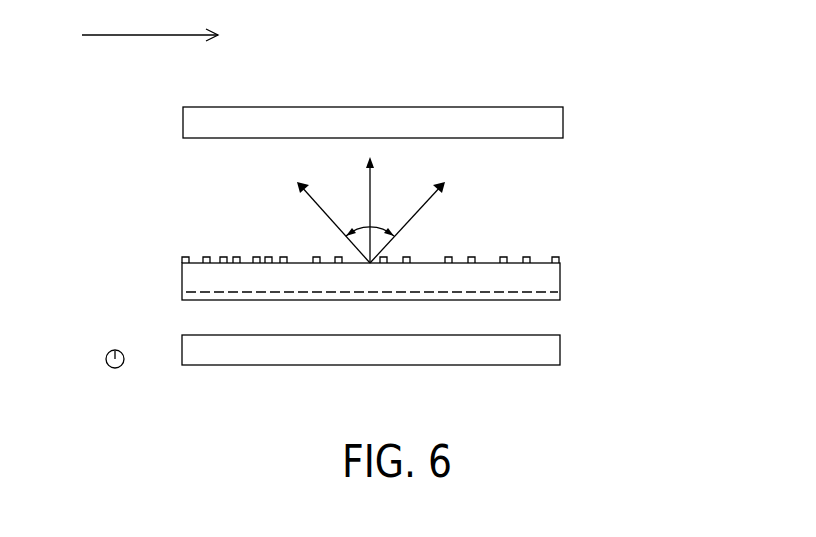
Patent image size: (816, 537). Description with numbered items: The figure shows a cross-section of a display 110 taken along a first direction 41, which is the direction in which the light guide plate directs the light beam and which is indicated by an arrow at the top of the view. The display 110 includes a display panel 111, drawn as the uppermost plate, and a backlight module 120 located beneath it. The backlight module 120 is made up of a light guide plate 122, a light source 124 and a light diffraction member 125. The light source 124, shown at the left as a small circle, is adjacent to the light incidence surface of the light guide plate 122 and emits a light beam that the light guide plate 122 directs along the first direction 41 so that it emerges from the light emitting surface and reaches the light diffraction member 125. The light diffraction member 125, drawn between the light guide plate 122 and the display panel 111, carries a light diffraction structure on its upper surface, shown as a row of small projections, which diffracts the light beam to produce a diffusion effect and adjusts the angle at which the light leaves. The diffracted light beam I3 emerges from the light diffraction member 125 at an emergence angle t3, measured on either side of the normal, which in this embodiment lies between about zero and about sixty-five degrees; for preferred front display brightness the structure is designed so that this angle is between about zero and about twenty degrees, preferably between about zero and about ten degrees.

The display 110 is at (695, 68).
The first direction 41 is at (168, 37).
The display panel 111 is at (563, 124).
The backlight module 120 is at (600, 262).
The light diffraction member 125 is at (540, 275).
The light guide plate 122 is at (560, 343).
The light source 124 is at (115, 351).
The light beam I3 is at (370, 210).
The emergence angle t3 is at (370, 217).